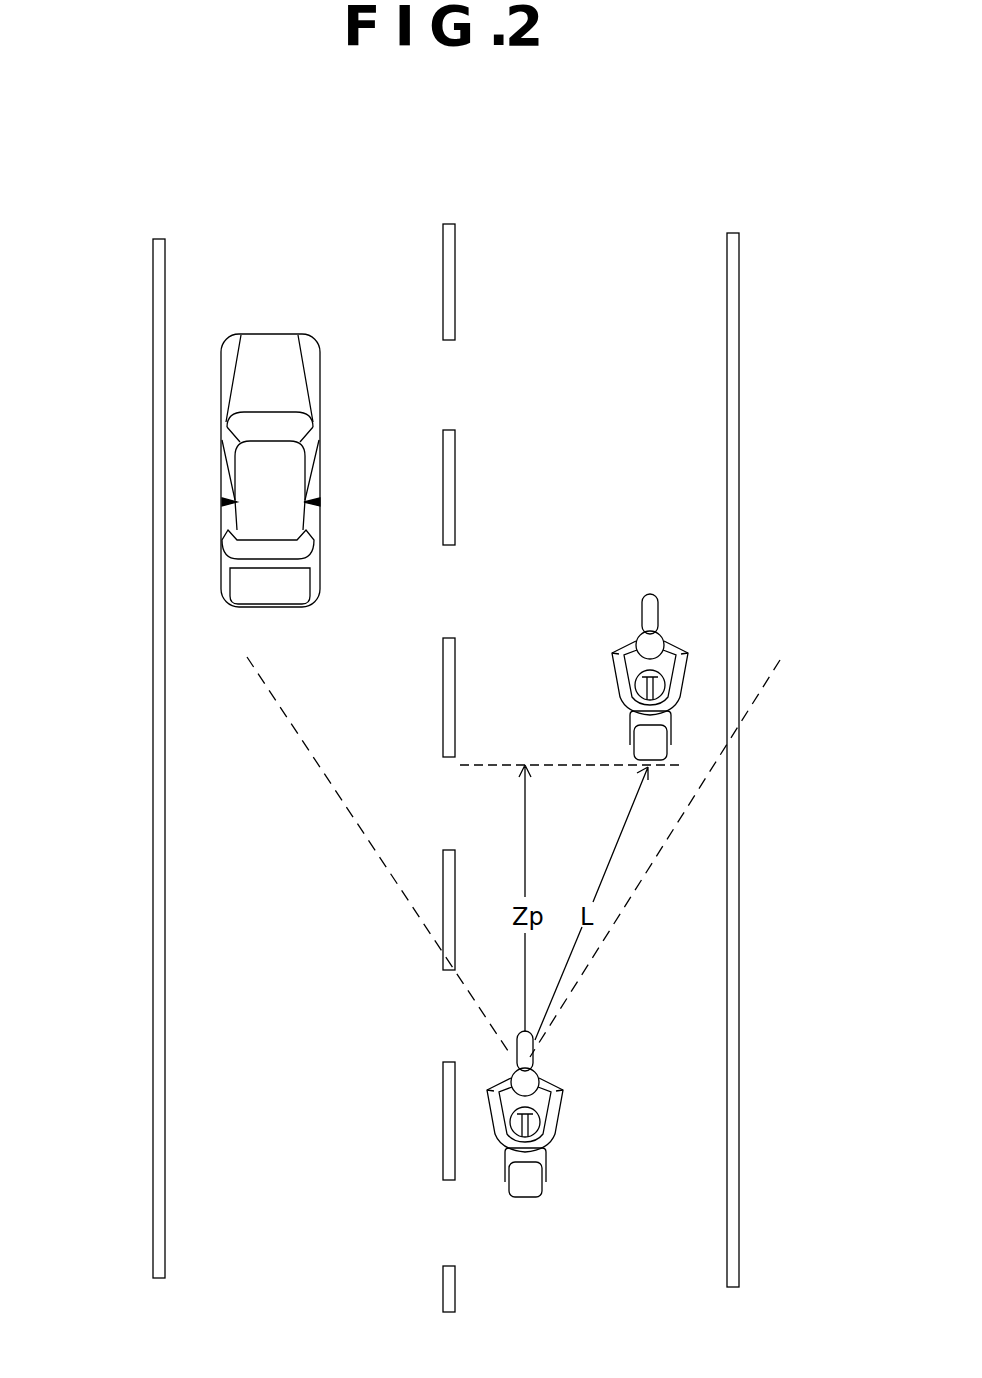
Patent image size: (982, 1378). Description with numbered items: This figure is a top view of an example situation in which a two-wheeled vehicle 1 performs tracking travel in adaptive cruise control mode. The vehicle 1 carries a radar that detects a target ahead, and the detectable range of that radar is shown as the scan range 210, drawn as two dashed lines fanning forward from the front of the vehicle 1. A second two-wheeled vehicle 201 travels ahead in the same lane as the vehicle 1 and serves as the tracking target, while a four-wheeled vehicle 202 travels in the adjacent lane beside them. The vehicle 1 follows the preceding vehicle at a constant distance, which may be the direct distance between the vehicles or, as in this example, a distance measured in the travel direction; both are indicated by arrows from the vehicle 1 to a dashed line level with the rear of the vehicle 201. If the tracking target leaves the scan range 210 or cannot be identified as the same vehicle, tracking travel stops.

The vehicle 1 is at (555, 1113).
The vehicle 201 is at (655, 640).
The vehicle 202 is at (226, 418).
The scan range 210 is at (272, 697).